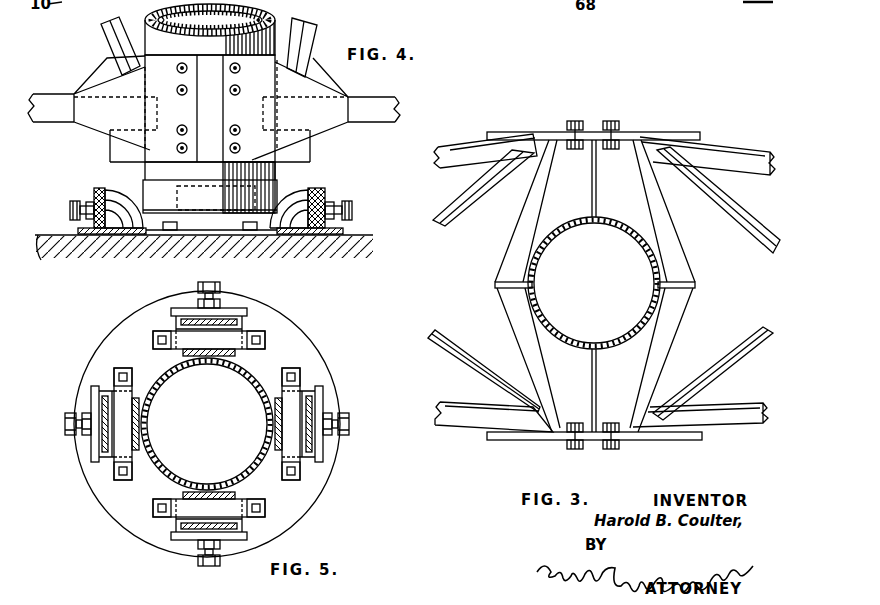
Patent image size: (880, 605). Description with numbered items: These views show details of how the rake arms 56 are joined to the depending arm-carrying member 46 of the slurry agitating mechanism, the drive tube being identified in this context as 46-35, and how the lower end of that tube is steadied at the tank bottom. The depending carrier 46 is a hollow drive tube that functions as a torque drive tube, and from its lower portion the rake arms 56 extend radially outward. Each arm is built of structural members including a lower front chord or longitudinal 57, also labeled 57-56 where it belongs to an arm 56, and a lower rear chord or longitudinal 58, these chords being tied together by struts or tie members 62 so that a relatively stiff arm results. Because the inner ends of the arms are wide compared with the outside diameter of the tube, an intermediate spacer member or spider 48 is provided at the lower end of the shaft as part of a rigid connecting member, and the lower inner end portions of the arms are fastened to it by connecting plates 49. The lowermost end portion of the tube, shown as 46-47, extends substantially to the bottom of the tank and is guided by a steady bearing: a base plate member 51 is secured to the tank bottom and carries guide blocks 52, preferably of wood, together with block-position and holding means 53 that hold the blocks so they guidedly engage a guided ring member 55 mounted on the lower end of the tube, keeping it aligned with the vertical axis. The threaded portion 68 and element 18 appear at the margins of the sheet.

In FIG. 3, the member 18 is at (736, 0).
In FIG. 4, the threaded upper end of column 68 is at (210, 18).
In FIG. 4, the rake arm carrier of slurry agitating mechanism 46-35 is at (277, 26).
In FIG. 3, the depending arm-carrying member 46 is at (545, 322).
In FIG. 4, the lowermost end portion of depending shaft 46-47 is at (150, 190).
In FIG. 5, the lowermost end portion of depending shaft 46-47 is at (268, 406).
In FIG. 4, the spacer member or spider 48 is at (307, 150).
In FIG. 3, the spacer member or spider 48 is at (518, 278).
In FIG. 4, the connecting plates 49 is at (107, 123).
In FIG. 3, the connecting plates 49 is at (530, 132).
In FIG. 4, the base plate member 51 is at (343, 231).
In FIG. 5, the base plate member 51 is at (320, 362).
In FIG. 4, the guide blocks 52 is at (297, 227).
In FIG. 5, the guide blocks 52 is at (290, 368).
In FIG. 5, the block-position and holding means 53 is at (343, 416).
In FIG. 4, the guided ring member 55 is at (281, 190).
In FIG. 4, the rake arms 56 is at (57, 72).
In FIG. 3, the lower front chord or longitudinal 57 is at (448, 146).
In FIG. 4, the lower front chord of rake arm 57-56 is at (358, 98).
In FIG. 4, the lower rear chord or longitudinal 58 is at (47, 97).
In FIG. 3, the lower rear chord or longitudinal 58 is at (740, 143).
In FIG. 3, the tie members 62 is at (482, 193).